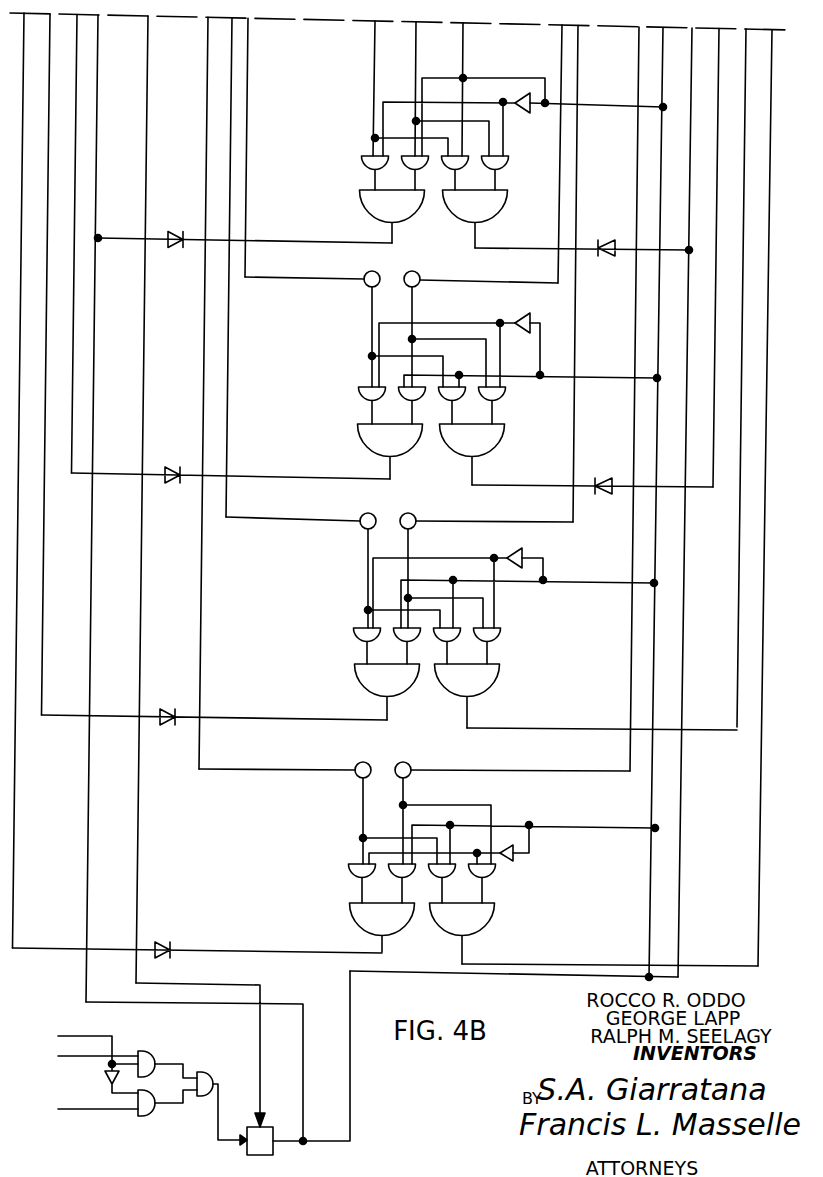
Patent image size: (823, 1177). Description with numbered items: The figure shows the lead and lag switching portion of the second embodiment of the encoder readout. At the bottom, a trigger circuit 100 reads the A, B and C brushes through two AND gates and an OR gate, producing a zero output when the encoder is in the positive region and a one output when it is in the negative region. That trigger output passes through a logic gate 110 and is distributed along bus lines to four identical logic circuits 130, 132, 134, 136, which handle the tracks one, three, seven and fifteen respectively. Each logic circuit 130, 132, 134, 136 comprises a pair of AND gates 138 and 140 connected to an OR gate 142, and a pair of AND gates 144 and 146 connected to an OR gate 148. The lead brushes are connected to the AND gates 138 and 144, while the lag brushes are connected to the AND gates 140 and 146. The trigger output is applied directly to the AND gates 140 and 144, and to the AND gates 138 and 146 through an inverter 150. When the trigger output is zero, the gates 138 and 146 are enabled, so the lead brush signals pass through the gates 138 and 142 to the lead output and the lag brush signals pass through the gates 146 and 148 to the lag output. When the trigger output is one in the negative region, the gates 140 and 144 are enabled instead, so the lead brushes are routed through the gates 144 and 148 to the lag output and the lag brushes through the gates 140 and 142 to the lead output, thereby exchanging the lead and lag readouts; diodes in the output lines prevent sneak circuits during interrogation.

The trigger circuit 100 is at (154, 1047).
The logic gate 110 is at (245, 1126).
The logic circuit 130 is at (345, 125).
The logic circuit 132 is at (346, 364).
The logic circuit 134 is at (344, 594).
The logic circuit 136 is at (348, 851).
The AND gate 138 is at (361, 165).
The AND gate 140 is at (400, 167).
The OR gate 142 is at (413, 224).
The AND gate 144 is at (443, 167).
The AND gate 146 is at (484, 167).
The OR gate 148 is at (504, 212).
The inverter 150 is at (523, 114).